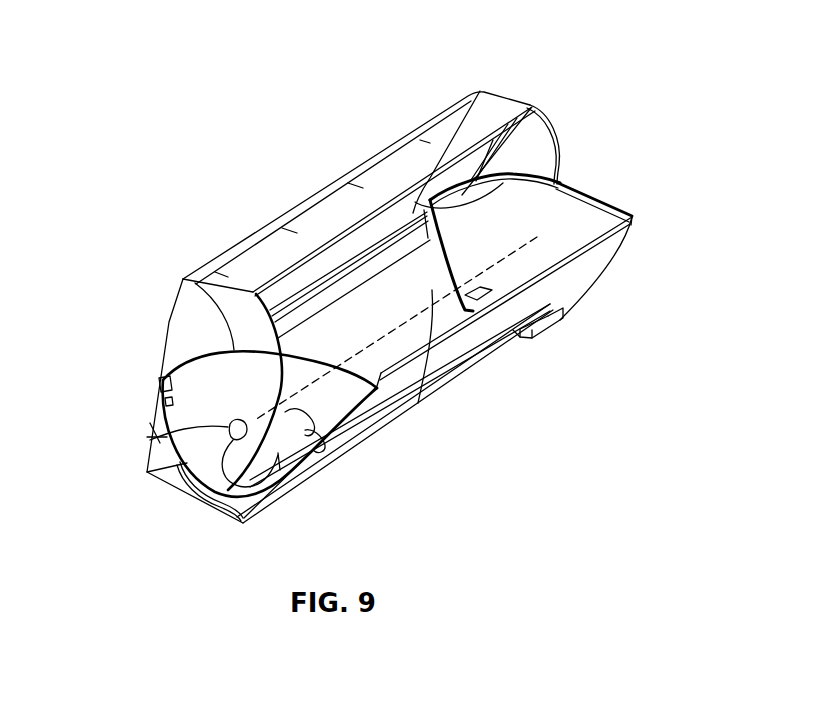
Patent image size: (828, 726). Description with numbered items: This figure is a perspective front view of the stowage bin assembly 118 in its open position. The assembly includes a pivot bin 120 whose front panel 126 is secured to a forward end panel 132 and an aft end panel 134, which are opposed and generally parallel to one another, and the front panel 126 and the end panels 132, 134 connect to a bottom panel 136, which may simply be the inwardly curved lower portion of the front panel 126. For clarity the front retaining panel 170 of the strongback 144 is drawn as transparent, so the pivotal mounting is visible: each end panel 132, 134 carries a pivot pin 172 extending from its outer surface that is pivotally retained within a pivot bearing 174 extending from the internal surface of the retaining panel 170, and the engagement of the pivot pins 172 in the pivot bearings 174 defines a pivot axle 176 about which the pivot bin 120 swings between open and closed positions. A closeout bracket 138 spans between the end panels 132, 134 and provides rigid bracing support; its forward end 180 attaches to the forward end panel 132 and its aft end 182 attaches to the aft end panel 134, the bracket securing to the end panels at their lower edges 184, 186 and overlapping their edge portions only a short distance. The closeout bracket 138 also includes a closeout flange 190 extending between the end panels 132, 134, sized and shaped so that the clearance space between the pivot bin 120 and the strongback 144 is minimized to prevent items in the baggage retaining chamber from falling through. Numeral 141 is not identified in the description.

The stowage bin assembly 118 is at (606, 279).
The pivot bin 120 is at (547, 297).
The front panel 126 is at (417, 405).
The forward end panel 132 is at (248, 513).
The aft end panel 134 is at (600, 198).
The bottom panel 136 is at (422, 292).
The closeout bracket 138 is at (300, 340).
The cable 141 is at (157, 433).
The strongback 144 is at (332, 188).
The retaining panel 170 is at (538, 138).
The pivot pin 172 is at (150, 474).
The pivot bearing 174 is at (198, 490).
The pivot axle 176 is at (418, 318).
The forward end 180 is at (168, 402).
The aft end 182 is at (477, 93).
The lower edge 184 is at (165, 383).
The lower edge 186 is at (531, 108).
The closeout flange 190 is at (184, 278).